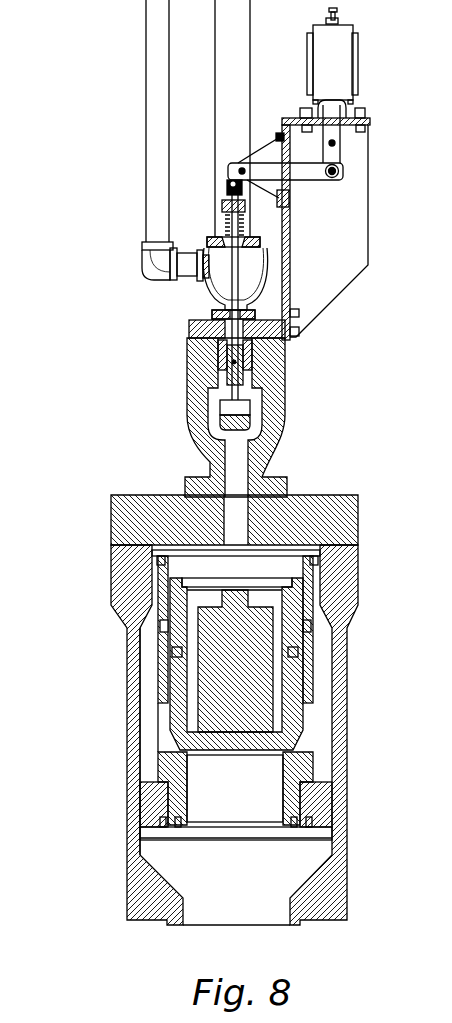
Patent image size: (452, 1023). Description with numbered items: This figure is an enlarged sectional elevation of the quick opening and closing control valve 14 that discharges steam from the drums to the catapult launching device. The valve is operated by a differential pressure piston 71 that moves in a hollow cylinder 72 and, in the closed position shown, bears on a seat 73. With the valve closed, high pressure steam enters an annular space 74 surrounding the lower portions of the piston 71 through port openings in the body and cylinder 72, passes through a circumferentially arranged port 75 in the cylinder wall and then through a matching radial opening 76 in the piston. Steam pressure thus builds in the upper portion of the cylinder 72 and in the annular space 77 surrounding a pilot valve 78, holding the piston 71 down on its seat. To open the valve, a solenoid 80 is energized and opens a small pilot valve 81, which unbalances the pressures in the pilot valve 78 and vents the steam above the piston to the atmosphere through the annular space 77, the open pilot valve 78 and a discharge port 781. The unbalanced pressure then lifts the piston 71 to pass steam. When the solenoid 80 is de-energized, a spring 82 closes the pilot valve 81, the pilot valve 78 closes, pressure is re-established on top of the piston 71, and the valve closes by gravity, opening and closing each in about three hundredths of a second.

The valve 14 is at (347, 775).
The piston 71 is at (303, 722).
The cylinder 72 is at (316, 679).
The seat 73 is at (280, 768).
The annular space 74 is at (148, 728).
The port 75 is at (312, 626).
The radial opening 76 is at (168, 633).
The annular space 77 is at (260, 437).
The pilot valve 78 is at (246, 372).
The discharge port 781 is at (236, 416).
The solenoid 80 is at (338, 62).
The pilot valve 81 is at (247, 311).
The spring 82 is at (228, 222).